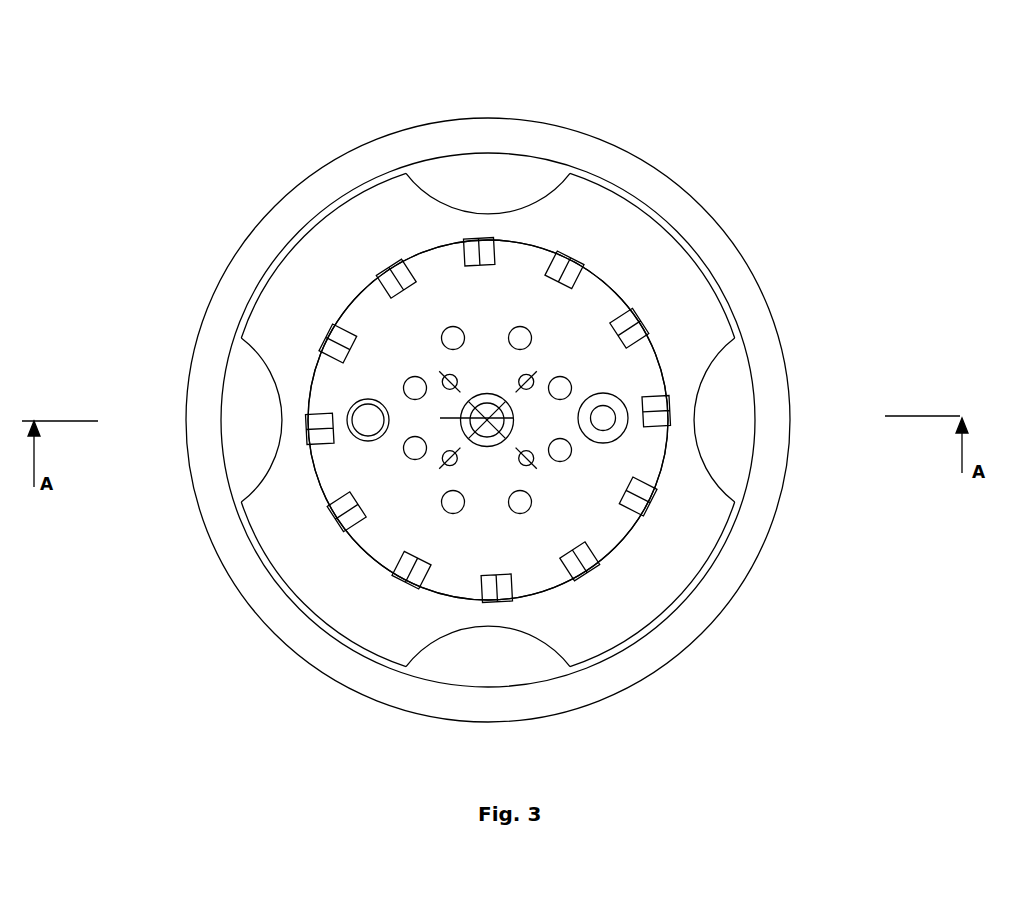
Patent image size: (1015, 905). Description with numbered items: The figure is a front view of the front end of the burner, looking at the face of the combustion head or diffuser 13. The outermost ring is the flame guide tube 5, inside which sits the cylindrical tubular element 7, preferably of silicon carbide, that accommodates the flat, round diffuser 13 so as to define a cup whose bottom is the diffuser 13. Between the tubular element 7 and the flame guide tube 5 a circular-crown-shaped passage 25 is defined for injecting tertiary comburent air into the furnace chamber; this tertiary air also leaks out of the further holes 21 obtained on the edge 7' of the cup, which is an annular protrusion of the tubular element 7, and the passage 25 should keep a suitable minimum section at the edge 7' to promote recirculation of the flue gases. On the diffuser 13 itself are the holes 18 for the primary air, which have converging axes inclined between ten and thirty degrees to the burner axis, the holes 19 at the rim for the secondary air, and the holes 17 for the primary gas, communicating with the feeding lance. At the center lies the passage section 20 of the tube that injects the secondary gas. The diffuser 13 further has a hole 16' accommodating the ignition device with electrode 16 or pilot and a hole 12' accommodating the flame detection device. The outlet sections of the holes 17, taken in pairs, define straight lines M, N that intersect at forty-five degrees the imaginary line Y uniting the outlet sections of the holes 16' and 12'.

The flame guide tube 5 is at (760, 327).
The cylindrical tubular element 7 is at (431, 395).
The edge of the cup 7' is at (488, 406).
The further hole 12' is at (265, 512).
The combustion head or diffuser 13 is at (590, 301).
The electrode 16 is at (498, 422).
The further hole 16' is at (703, 489).
The holes 17 is at (458, 380).
The holes 18 is at (410, 443).
The holes 19 is at (485, 247).
The passage section 20 is at (487, 420).
The further holes 21 is at (492, 195).
The circular-crown-shaped passage 25 is at (383, 180).
The straight line M is at (513, 397).
The straight line N is at (538, 470).
The imaginary line Y is at (900, 418).